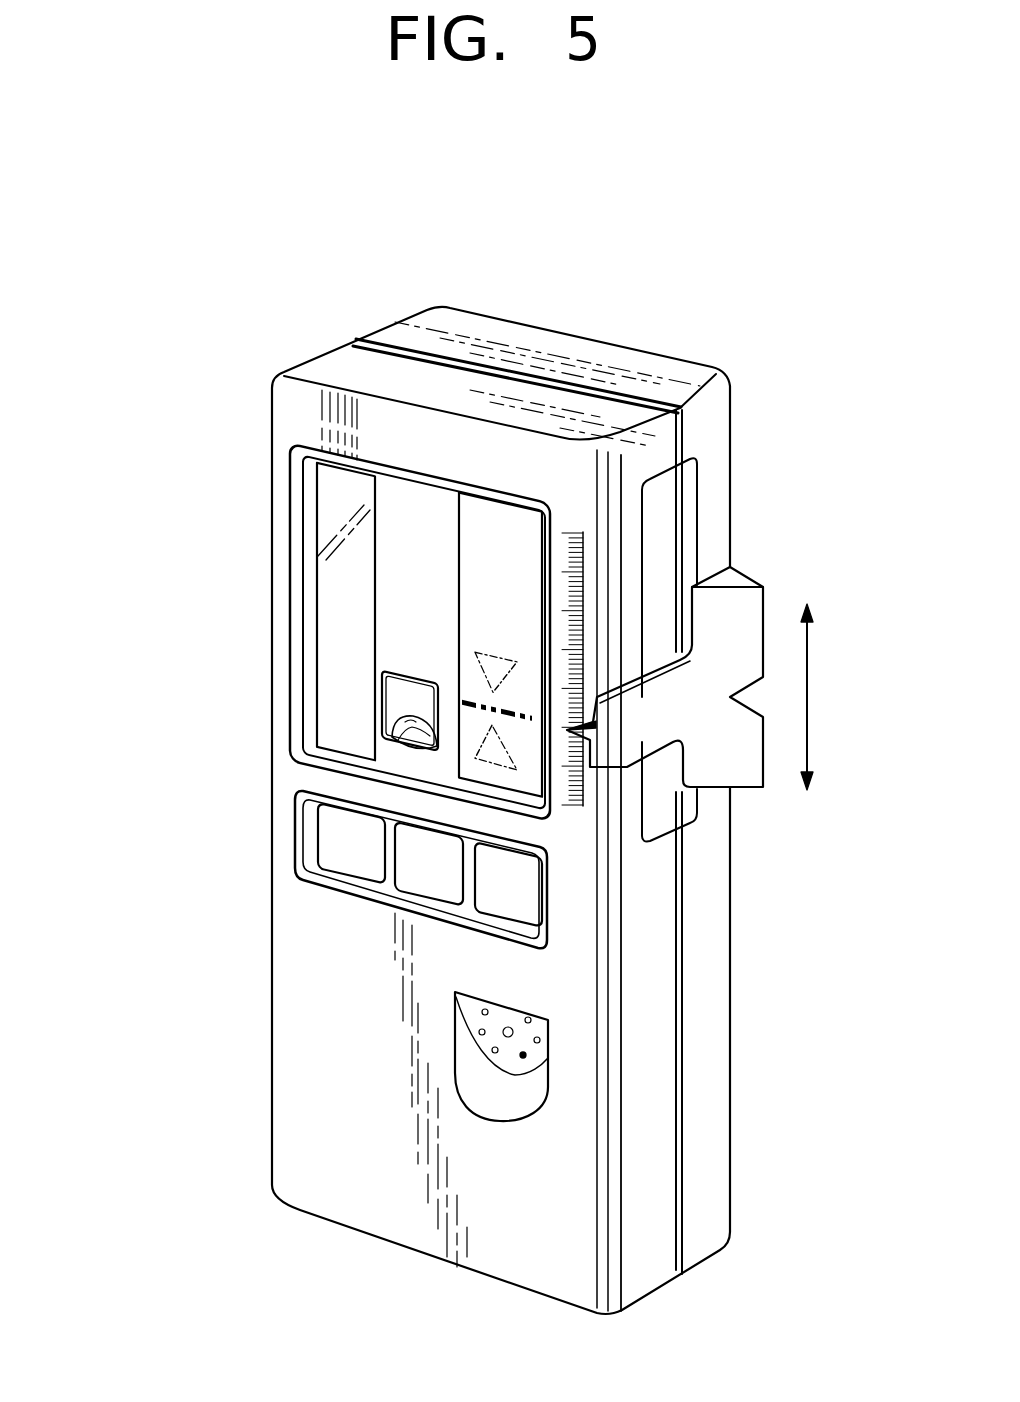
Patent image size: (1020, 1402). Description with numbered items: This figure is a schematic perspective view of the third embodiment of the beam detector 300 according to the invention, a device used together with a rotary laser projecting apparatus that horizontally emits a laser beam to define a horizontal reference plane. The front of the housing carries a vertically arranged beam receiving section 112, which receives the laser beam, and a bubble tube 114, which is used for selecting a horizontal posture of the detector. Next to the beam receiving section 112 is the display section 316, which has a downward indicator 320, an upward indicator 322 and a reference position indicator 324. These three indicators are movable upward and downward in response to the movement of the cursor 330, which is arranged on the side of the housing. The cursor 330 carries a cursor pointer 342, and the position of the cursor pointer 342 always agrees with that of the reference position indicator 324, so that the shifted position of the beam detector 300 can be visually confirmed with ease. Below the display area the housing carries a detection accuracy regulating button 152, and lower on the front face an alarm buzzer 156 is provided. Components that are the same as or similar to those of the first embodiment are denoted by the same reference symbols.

The beam detector 300 is at (480, 268).
The beam receiving section 112 is at (322, 582).
The bubble tube 114 is at (490, 730).
The display section 316 is at (497, 525).
The downward indicator 320 is at (478, 655).
The upward indicator 322 is at (392, 714).
The reference position indicator 324 is at (438, 692).
The cursor pointer 342 is at (570, 727).
The cursor 330 is at (710, 730).
The detection accuracy regulating button 152 is at (350, 857).
The alarm buzzer 156 is at (523, 1055).